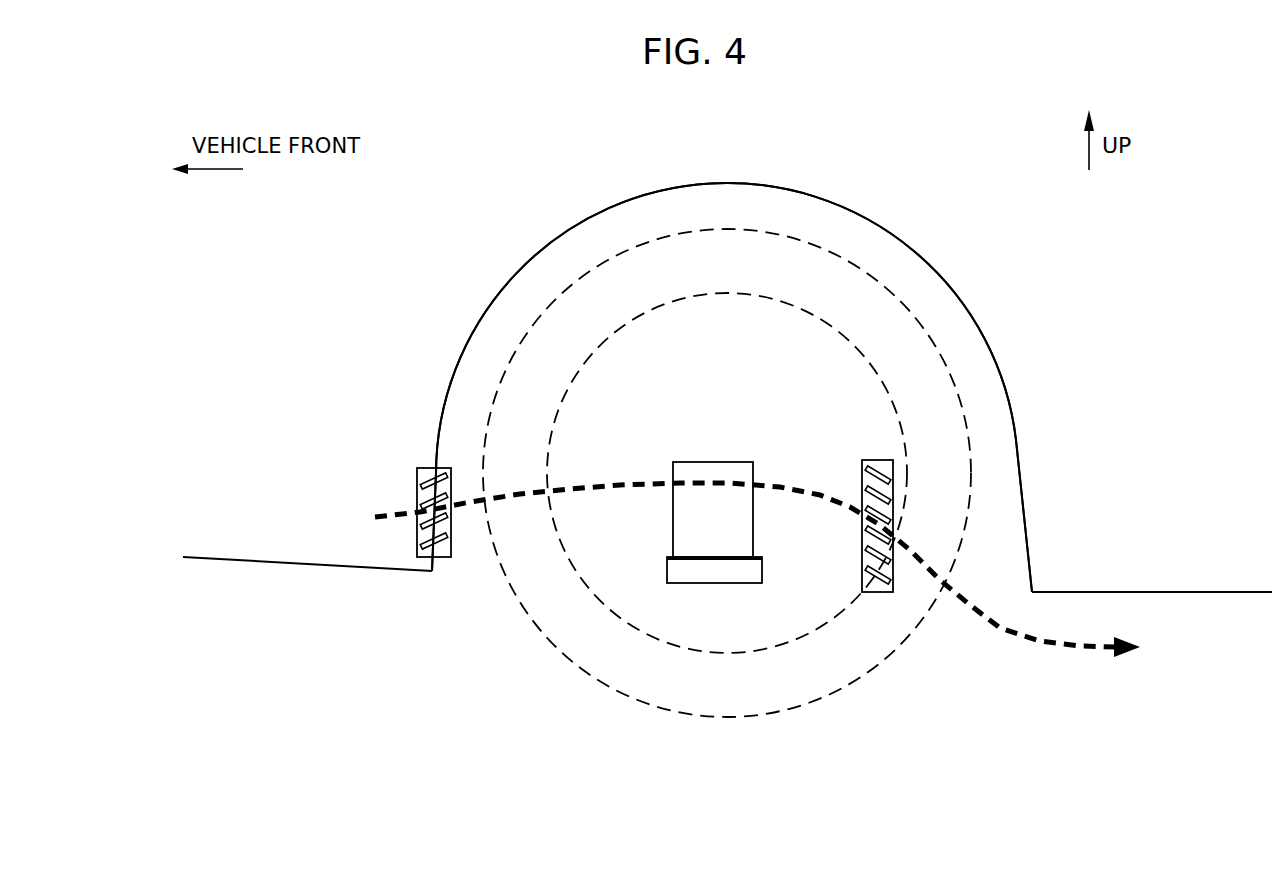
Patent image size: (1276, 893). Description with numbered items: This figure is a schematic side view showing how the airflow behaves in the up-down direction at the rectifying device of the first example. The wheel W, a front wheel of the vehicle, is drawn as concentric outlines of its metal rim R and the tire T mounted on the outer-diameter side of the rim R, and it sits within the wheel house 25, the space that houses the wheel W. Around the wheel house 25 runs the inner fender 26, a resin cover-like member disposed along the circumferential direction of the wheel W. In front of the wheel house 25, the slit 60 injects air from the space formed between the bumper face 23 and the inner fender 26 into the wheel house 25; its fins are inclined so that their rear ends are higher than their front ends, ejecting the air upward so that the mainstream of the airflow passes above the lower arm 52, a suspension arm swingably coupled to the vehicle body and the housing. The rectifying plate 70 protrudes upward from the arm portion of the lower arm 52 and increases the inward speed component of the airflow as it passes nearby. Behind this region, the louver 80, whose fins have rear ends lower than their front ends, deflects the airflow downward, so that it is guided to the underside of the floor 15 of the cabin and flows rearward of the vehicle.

The floor 15 is at (1190, 592).
The bumper face 23 is at (363, 569).
The wheel house 25 is at (466, 344).
The inner fender 26 is at (446, 398).
The lower arm 52 is at (723, 573).
The slit 60 is at (435, 557).
The rectifying plate 70 is at (682, 530).
The louver 80 is at (880, 593).
The wheel W is at (567, 267).
The tire T is at (620, 252).
The rim R is at (672, 298).